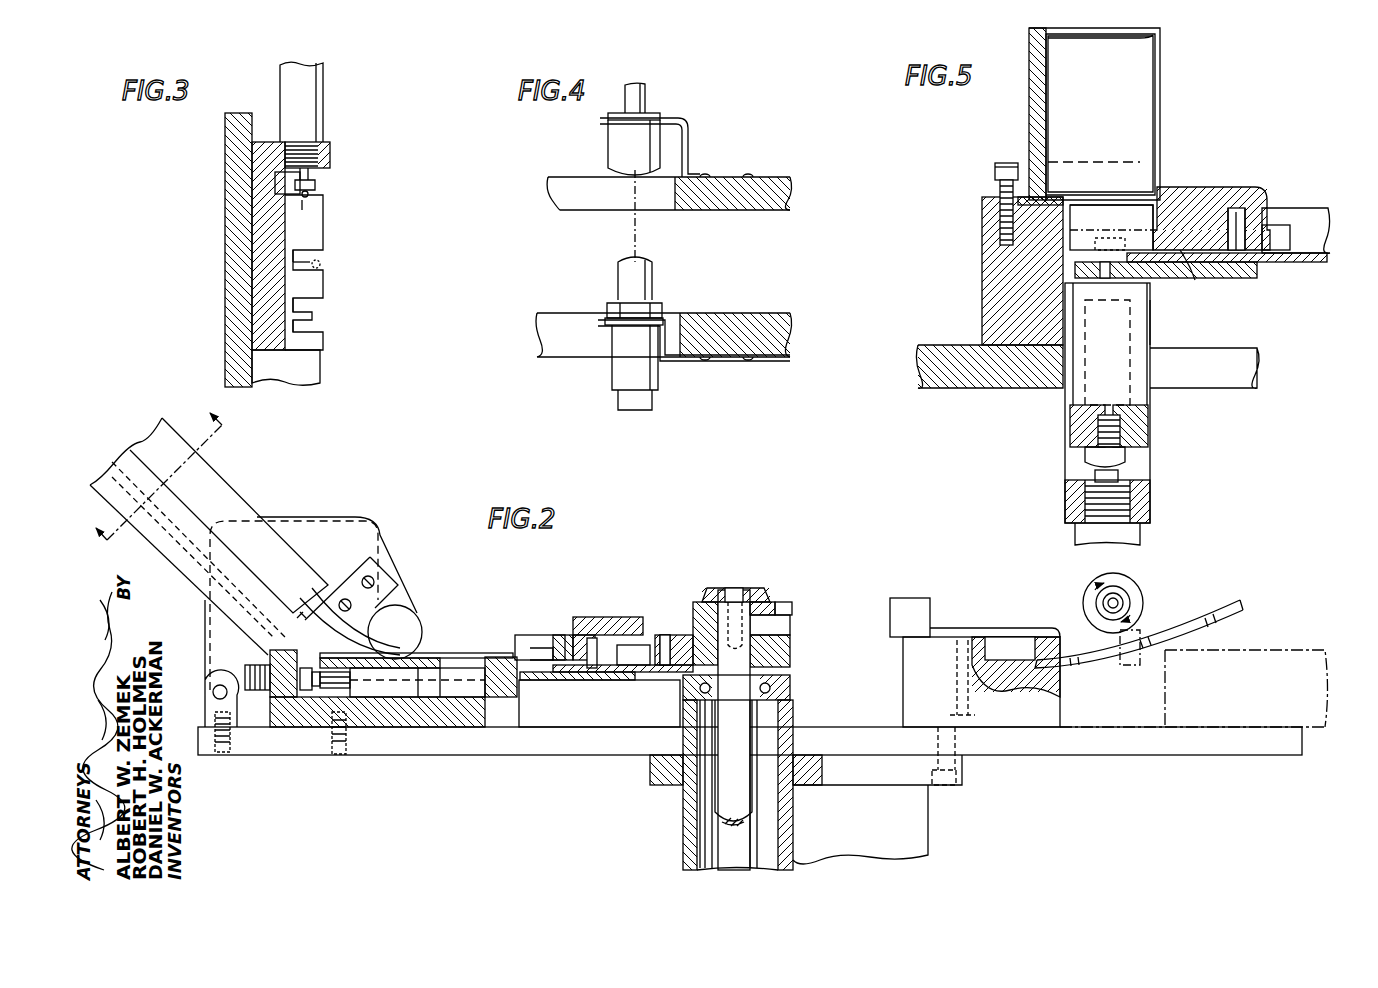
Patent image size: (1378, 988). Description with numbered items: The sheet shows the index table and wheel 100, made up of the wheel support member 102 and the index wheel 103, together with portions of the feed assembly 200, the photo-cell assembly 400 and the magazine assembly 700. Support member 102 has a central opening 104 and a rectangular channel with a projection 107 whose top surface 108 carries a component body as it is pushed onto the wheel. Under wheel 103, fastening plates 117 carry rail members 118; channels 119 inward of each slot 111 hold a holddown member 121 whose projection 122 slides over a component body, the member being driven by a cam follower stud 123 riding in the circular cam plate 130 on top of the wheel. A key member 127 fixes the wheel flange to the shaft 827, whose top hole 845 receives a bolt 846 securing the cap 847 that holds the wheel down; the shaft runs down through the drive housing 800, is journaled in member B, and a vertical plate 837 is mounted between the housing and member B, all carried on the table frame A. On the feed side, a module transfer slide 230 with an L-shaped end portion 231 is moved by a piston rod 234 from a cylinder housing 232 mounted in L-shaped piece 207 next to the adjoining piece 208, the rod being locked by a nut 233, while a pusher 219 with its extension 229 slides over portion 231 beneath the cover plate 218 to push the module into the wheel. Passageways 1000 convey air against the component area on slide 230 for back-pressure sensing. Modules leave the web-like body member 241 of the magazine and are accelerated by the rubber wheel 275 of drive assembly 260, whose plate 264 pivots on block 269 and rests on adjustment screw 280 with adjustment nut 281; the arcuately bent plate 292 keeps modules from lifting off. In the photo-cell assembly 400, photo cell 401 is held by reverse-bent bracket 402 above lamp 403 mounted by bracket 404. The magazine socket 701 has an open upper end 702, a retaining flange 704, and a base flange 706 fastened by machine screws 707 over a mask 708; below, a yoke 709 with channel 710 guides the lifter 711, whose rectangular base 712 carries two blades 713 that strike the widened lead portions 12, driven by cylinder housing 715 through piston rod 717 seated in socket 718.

In FIG. 2, the flat and widened portions of the leads 12 is at (145, 468).
In FIG. 2, the index table and wheel 100 is at (900, 592).
In FIG. 3, the wheel support member 102 is at (323, 287).
In FIG. 4, the wheel support member 102 is at (752, 212).
In FIG. 5, the wheel support member 102 is at (982, 290).
In FIG. 2, the wheel support member 102 is at (876, 705).
In FIG. 5, the index wheel 103 is at (1330, 228).
In FIG. 2, the index wheel 103 is at (688, 636).
In FIG. 2, the central opening 104 is at (640, 716).
In FIG. 3, the projection 107 is at (305, 318).
In FIG. 3, the top surface 108 is at (305, 311).
In FIG. 2, the slot 111 is at (530, 634).
In FIG. 5, the fastening plates 117 is at (1300, 263).
In FIG. 2, the fastening plates 117 is at (652, 672).
In FIG. 5, the rail members 118 is at (1195, 285).
In FIG. 2, the rail members 118 is at (565, 680).
In FIG. 5, the channels 119 is at (1275, 225).
In FIG. 2, the channels 119 is at (660, 638).
In FIG. 5, the holddown member 121 is at (1290, 240).
In FIG. 2, the holddown member 121 is at (618, 645).
In FIG. 5, the projection 122 is at (1190, 270).
In FIG. 2, the projection 122 is at (558, 634).
In FIG. 5, the cam follower stud 123 is at (1240, 210).
In FIG. 2, the cam follower stud 123 is at (590, 668).
In FIG. 2, the key member 127 is at (778, 612).
In FIG. 5, the cam plate 130 is at (1175, 190).
In FIG. 2, the cam plate 130 is at (580, 617).
In FIG. 2, the feed assembly 200 is at (455, 630).
In FIG. 3, the L-shaped piece 207 is at (330, 152).
In FIG. 3, the pin 208 is at (310, 182).
In FIG. 2, the cover plate 218 is at (490, 653).
In FIG. 2, the pusher 219 is at (297, 685).
In FIG. 2, the extension 229 is at (474, 689).
In FIG. 3, the module transfer slide 230 is at (323, 232).
In FIG. 3, the L-shaped end portion 231 is at (312, 258).
In FIG. 3, the cylinder housing 232 is at (323, 90).
In FIG. 3, the nut 233 is at (302, 215).
In FIG. 3, the piston rod 234 is at (315, 186).
In FIG. 2, the body member 241 is at (228, 466).
In FIG. 2, the drive assembly 260 is at (390, 550).
In FIG. 2, the plate 264 is at (340, 518).
In FIG. 2, the block 269 is at (205, 718).
In FIG. 2, the rubber wheel 275 is at (420, 620).
In FIG. 2, the adjustment screw 280 is at (345, 755).
In FIG. 2, the adjustment nut 281 is at (377, 697).
In FIG. 2, the arcuately bent flat plate 292 is at (325, 600).
In FIG. 4, the photo-cell assembly 400 is at (690, 100).
In FIG. 4, the photo-cell assembly 401 is at (610, 150).
In FIG. 4, the bracket 402 is at (690, 143).
In FIG. 4, the lamp 403 is at (620, 289).
In FIG. 4, the bracket 404 is at (712, 365).
In FIG. 5, the magazine assembly 700 is at (1027, 133).
In FIG. 5, the magazine socket 701 is at (1028, 99).
In FIG. 5, the open upper end 702 is at (1150, 30).
In FIG. 5, the flange 704 is at (1160, 82).
In FIG. 5, the base flange 706 is at (996, 174).
In FIG. 5, the machine screws 707 is at (1008, 165).
In FIG. 5, the mask 708 is at (986, 199).
In FIG. 5, the yoke 709 is at (1063, 510).
In FIG. 5, the channel 710 is at (1148, 313).
In FIG. 5, the lifter 711 is at (1068, 420).
In FIG. 5, the rectangular base 712 is at (1150, 420).
In FIG. 5, the blades 713 is at (1150, 338).
In FIG. 5, the cylinder housing 715 is at (1140, 535).
In FIG. 5, the piston rod 717 is at (1093, 475).
In FIG. 5, the socket 718 is at (1110, 440).
In FIG. 2, the bearing housing 800 is at (672, 825).
In FIG. 2, the shaft 827 is at (727, 810).
In FIG. 2, the vertical plate 837 is at (928, 850).
In FIG. 2, the hole 845 is at (792, 655).
In FIG. 2, the bolt 846 is at (756, 587).
In FIG. 2, the cap 847 is at (766, 590).
In FIG. 3, the passageways 1000 is at (320, 266).
In FIG. 2, the passageways 1000 is at (500, 755).
In FIG. 3, the table frame A is at (232, 358).
In FIG. 5, the table frame A is at (980, 388).
In FIG. 2, the table frame A is at (298, 758).
In FIG. 2, the member B is at (958, 785).
In FIG. 5, the point X is at (1178, 200).